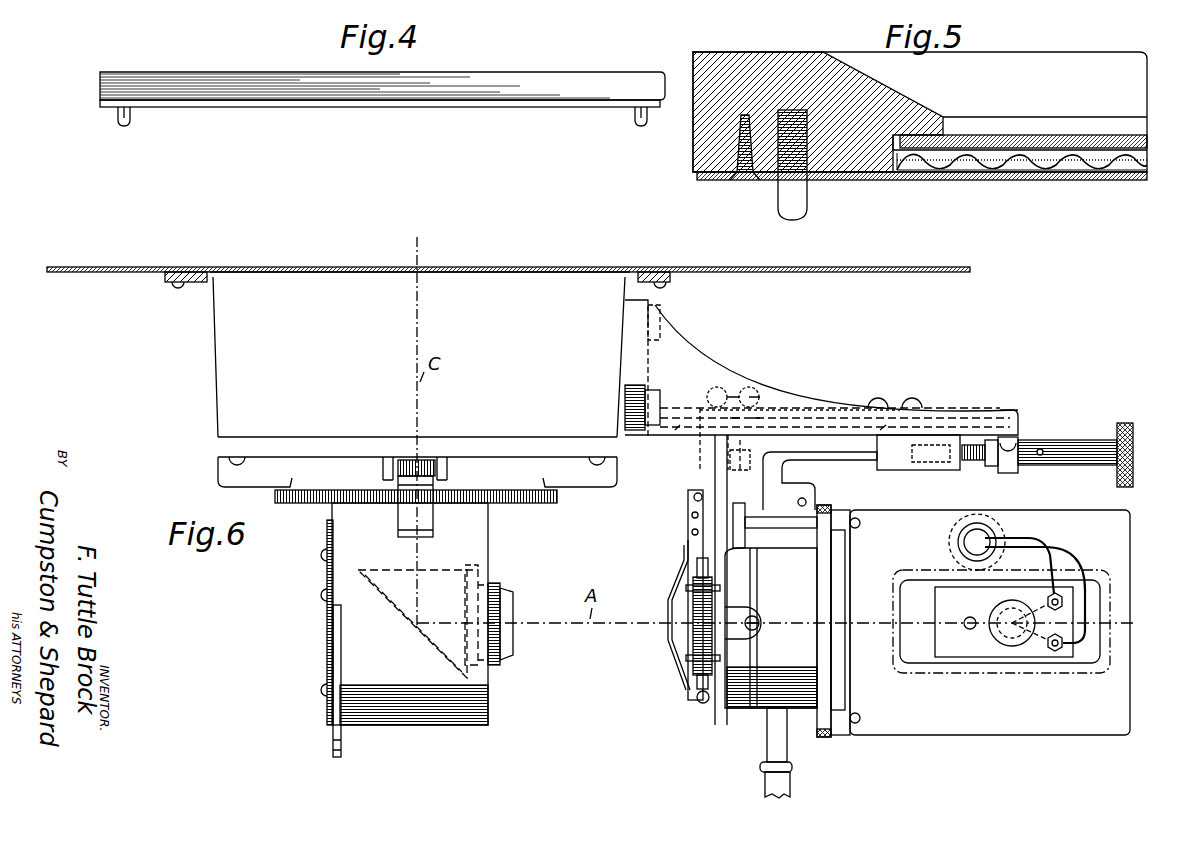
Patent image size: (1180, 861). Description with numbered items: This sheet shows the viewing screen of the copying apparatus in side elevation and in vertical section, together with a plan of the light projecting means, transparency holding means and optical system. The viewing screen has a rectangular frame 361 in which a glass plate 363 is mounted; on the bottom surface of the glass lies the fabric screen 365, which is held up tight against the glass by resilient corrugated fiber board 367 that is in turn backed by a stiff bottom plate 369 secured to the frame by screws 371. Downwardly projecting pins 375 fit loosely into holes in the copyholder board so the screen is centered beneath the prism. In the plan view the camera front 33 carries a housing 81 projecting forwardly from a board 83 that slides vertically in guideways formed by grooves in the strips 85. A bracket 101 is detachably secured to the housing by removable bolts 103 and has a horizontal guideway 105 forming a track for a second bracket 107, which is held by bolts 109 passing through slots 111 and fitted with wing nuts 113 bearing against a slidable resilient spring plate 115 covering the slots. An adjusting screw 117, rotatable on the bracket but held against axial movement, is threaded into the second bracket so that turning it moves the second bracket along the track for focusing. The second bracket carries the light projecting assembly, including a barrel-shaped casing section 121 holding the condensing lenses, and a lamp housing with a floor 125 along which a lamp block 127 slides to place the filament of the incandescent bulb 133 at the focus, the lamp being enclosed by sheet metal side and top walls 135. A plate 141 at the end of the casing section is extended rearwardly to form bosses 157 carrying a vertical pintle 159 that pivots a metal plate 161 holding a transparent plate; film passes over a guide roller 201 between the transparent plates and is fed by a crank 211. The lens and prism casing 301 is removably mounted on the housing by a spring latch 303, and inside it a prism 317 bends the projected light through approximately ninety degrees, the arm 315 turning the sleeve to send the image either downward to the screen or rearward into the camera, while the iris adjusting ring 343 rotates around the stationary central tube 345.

In FIG. 6, the camera front 33 is at (98, 272).
In FIG. 6, the housing 81 is at (216, 366).
In FIG. 6, the board 83 is at (304, 273).
In FIG. 6, the strips 85 is at (196, 282).
In FIG. 6, the bracket 101 is at (702, 352).
In FIG. 6, the removable bolts 103 is at (660, 312).
In FIG. 6, the guideway 105 is at (812, 420).
In FIG. 6, the second bracket 107 is at (765, 485).
In FIG. 6, the bolts 109 is at (758, 410).
In FIG. 6, the slots 111 is at (962, 420).
In FIG. 6, the wing nuts 113 is at (717, 390).
In FIG. 6, the resilient spring plate 115 is at (838, 418).
In FIG. 6, the adjusting screw 117 is at (1060, 440).
In FIG. 6, the casing section 121 is at (750, 720).
In FIG. 6, the floor 125 is at (1046, 725).
In FIG. 6, the lamp block 127 is at (993, 662).
In FIG. 6, the incandescent bulb 133 is at (990, 610).
In FIG. 6, the side and top walls 135 is at (905, 510).
In FIG. 6, the plate 141 is at (700, 703).
In FIG. 6, the bosses 157 is at (695, 494).
In FIG. 6, the pintle 159 is at (700, 490).
In FIG. 6, the metal plate 161 is at (688, 545).
In FIG. 6, the guide roller 201 is at (710, 612).
In FIG. 6, the crank 211 is at (790, 780).
In FIG. 6, the casing 301 is at (488, 560).
In FIG. 6, the releasable spring latch 303 is at (435, 525).
In FIG. 6, the arm 315 is at (342, 745).
In FIG. 6, the prism 317 is at (383, 572).
In FIG. 6, the adjusting ring 343 is at (494, 585).
In FIG. 6, the central tube 345 is at (515, 603).
In FIG. 4, the rectangular frame 361 is at (586, 72).
In FIG. 5, the rectangular frame 361 is at (785, 55).
In FIG. 5, the glass plate 363 is at (1014, 135).
In FIG. 5, the screen 365 is at (948, 172).
In FIG. 5, the corrugated fiber board 367 is at (1040, 170).
In FIG. 4, the bottom plate 369 is at (458, 107).
In FIG. 5, the bottom plate 369 is at (1100, 180).
In FIG. 5, the screws 371 is at (744, 174).
In FIG. 4, the pins 375 is at (134, 114).
In FIG. 5, the pins 375 is at (808, 198).